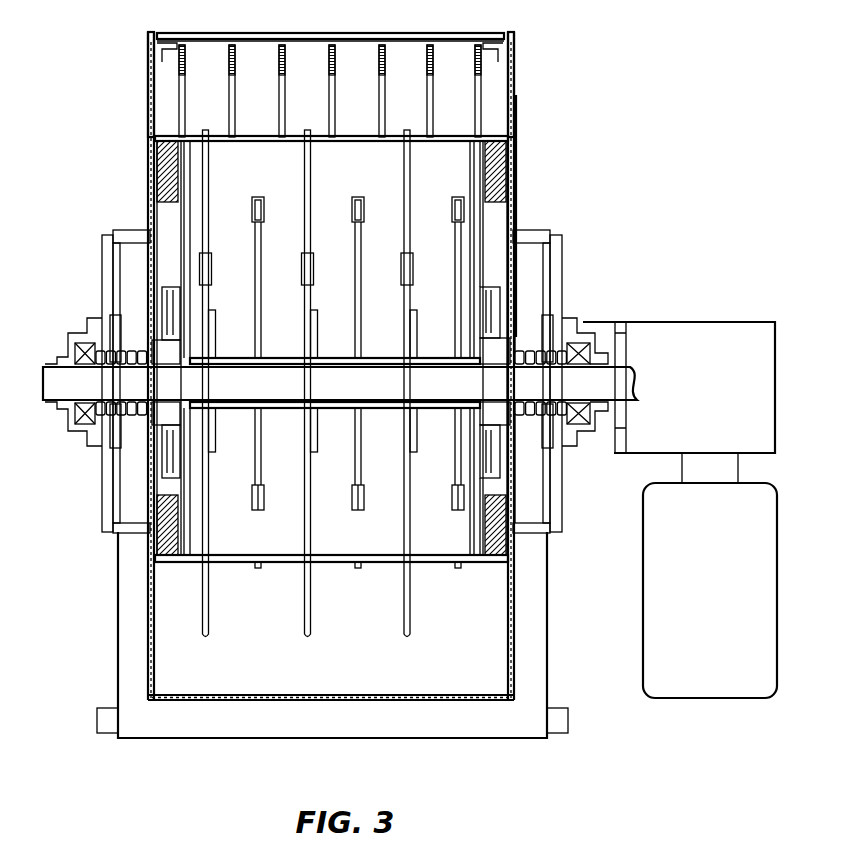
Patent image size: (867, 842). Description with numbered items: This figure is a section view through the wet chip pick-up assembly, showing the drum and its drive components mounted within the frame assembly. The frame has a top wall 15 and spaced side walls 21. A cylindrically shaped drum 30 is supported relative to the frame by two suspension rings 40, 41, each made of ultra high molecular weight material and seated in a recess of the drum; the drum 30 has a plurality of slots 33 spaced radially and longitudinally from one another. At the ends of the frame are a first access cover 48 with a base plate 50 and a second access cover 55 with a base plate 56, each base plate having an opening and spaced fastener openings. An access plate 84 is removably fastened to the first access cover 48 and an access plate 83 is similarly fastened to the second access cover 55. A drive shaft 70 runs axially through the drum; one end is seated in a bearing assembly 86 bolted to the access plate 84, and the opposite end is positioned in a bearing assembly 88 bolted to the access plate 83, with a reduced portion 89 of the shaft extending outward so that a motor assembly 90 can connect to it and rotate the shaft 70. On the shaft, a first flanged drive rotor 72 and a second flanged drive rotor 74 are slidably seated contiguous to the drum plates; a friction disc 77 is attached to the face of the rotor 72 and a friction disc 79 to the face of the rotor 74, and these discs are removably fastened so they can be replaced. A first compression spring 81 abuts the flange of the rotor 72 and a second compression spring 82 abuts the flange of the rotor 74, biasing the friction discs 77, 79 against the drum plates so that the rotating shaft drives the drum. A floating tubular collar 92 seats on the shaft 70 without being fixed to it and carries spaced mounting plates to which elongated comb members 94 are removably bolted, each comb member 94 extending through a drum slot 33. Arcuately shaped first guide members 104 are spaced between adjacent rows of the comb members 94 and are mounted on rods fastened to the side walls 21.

The top wall 15 is at (308, 33).
The side walls 21 is at (150, 44).
The drum 30 is at (375, 565).
The slots 33 is at (205, 130).
The suspension ring 40 is at (500, 190).
The suspension ring 41 is at (165, 170).
The first access cover 48 is at (130, 230).
The base plate 50 is at (149, 137).
The second access cover 55 is at (531, 234).
The base plate 56 is at (517, 147).
The drive shaft 70 is at (310, 392).
The first flanged drive rotor 72 is at (505, 415).
The second flanged drive rotor 74 is at (157, 415).
The friction disc 77 is at (487, 302).
The friction disc 79 is at (178, 452).
The first compression spring 81 is at (533, 355).
The second compression spring 82 is at (135, 350).
The access plate 83 is at (563, 250).
The access plate 84 is at (108, 480).
The bearing assembly 86 is at (68, 336).
The bearing assembly 88 is at (581, 335).
The reduced portion 89 is at (641, 370).
The motor assembly 90 is at (650, 526).
The floating tubular collar 92 is at (231, 358).
The comb members 94 is at (210, 622).
The first guide members 104 is at (278, 110).